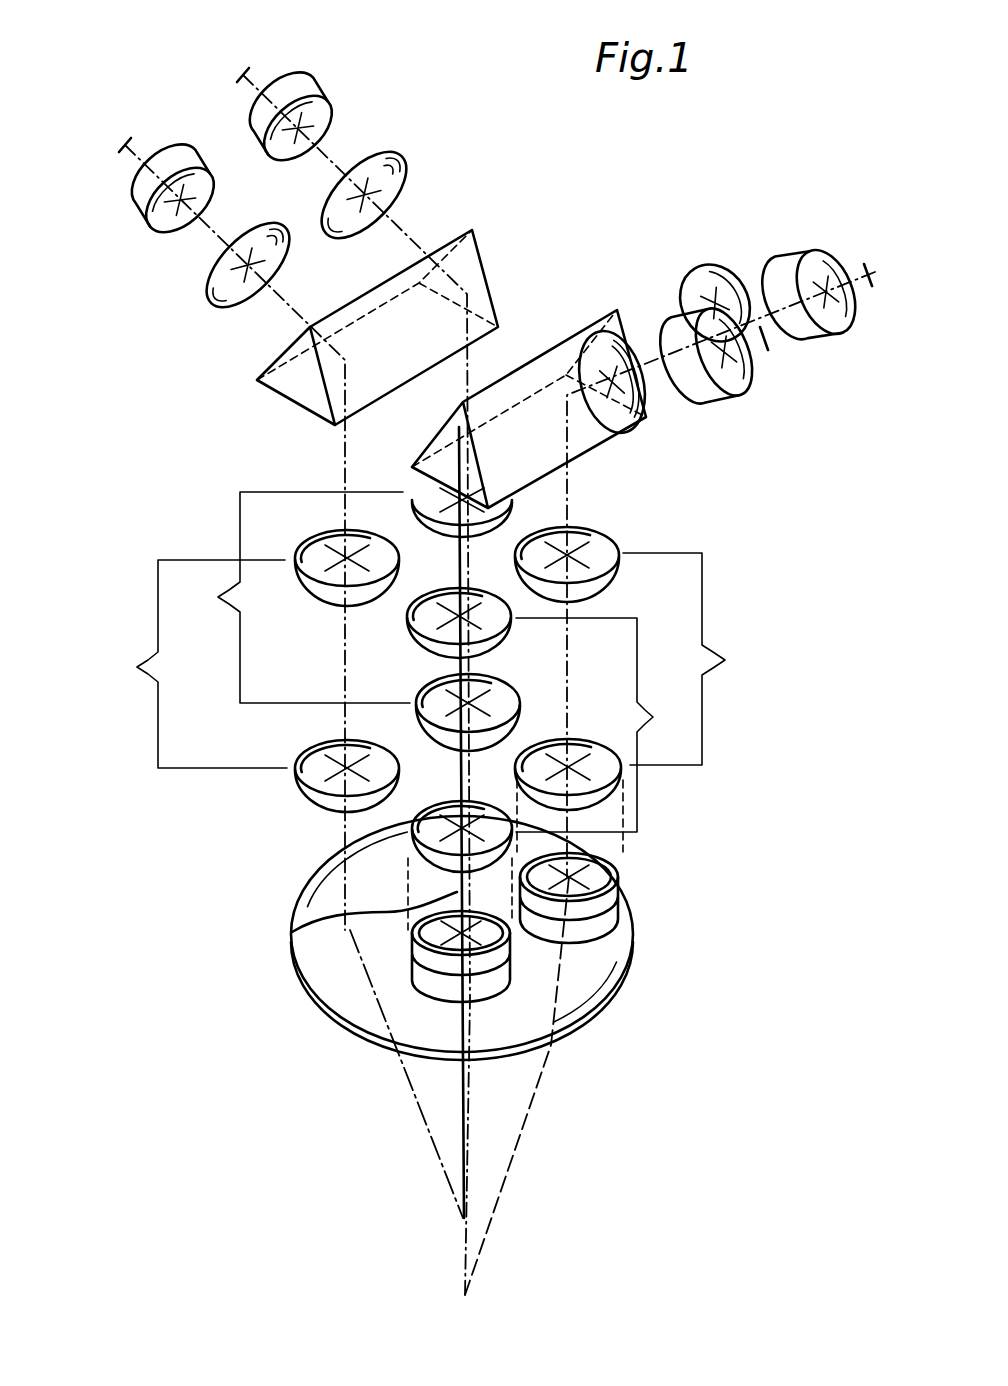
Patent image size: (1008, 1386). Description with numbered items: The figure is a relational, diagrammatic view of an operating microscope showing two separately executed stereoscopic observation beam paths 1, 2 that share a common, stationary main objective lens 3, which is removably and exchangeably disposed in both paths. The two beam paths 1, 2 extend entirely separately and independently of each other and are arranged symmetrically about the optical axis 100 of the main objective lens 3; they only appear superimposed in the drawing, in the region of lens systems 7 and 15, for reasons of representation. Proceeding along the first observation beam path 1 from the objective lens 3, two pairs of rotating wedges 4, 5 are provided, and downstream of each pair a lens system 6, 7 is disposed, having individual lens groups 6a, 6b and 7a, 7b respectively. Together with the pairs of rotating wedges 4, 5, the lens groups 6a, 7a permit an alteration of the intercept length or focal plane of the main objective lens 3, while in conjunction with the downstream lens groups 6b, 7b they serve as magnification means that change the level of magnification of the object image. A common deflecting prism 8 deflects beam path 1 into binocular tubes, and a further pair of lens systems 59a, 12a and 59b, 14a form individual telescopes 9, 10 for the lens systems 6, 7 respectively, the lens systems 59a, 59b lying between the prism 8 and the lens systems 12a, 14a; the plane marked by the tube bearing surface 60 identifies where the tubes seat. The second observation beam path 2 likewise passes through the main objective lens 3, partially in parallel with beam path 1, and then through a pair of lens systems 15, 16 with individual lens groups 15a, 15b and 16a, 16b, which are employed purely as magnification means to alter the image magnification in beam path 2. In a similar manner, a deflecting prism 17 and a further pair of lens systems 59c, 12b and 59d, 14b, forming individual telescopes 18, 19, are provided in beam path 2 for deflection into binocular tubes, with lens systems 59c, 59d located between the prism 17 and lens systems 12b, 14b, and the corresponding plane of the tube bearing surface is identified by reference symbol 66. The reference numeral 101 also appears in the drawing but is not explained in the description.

The stereoscopic observation beam path 1 is at (520, 1090).
The stereoscopic observation beam path 2 is at (430, 1090).
The main objective lens 3 is at (600, 953).
The pair of rotating wedges 4 is at (638, 887).
The pair of rotating wedges 5 is at (395, 956).
The lens system 6 is at (631, 689).
The lens group 6a is at (588, 752).
The lens group 6b is at (613, 567).
The lens system 7 is at (542, 759).
The lens group 7a is at (437, 805).
The lens group 7b is at (500, 633).
The deflecting prism 8 is at (593, 438).
The telescope 9 is at (575, 409).
The telescope 10 is at (752, 274).
The lens system 12a is at (737, 387).
The lens system 12b is at (312, 75).
The lens system 14a is at (800, 262).
The lens system 14b is at (136, 205).
The lens system 15 is at (354, 589).
The lens group 15a is at (432, 688).
The lens group 15b is at (417, 487).
The lens system 16 is at (252, 649).
The lens group 16a is at (305, 785).
The lens group 16b is at (330, 540).
The deflecting prism 17 is at (473, 270).
The telescope 18 is at (361, 134).
The telescope 19 is at (182, 245).
The lens system 59a is at (648, 396).
The lens system 59b is at (690, 290).
The lens system 59c is at (400, 178).
The lens system 59d is at (222, 300).
The tube bearing surface 60 is at (866, 262).
The tube bearing surface 66 is at (120, 140).
The optical axis 100 is at (292, 932).
The focal point 101 is at (465, 1126).